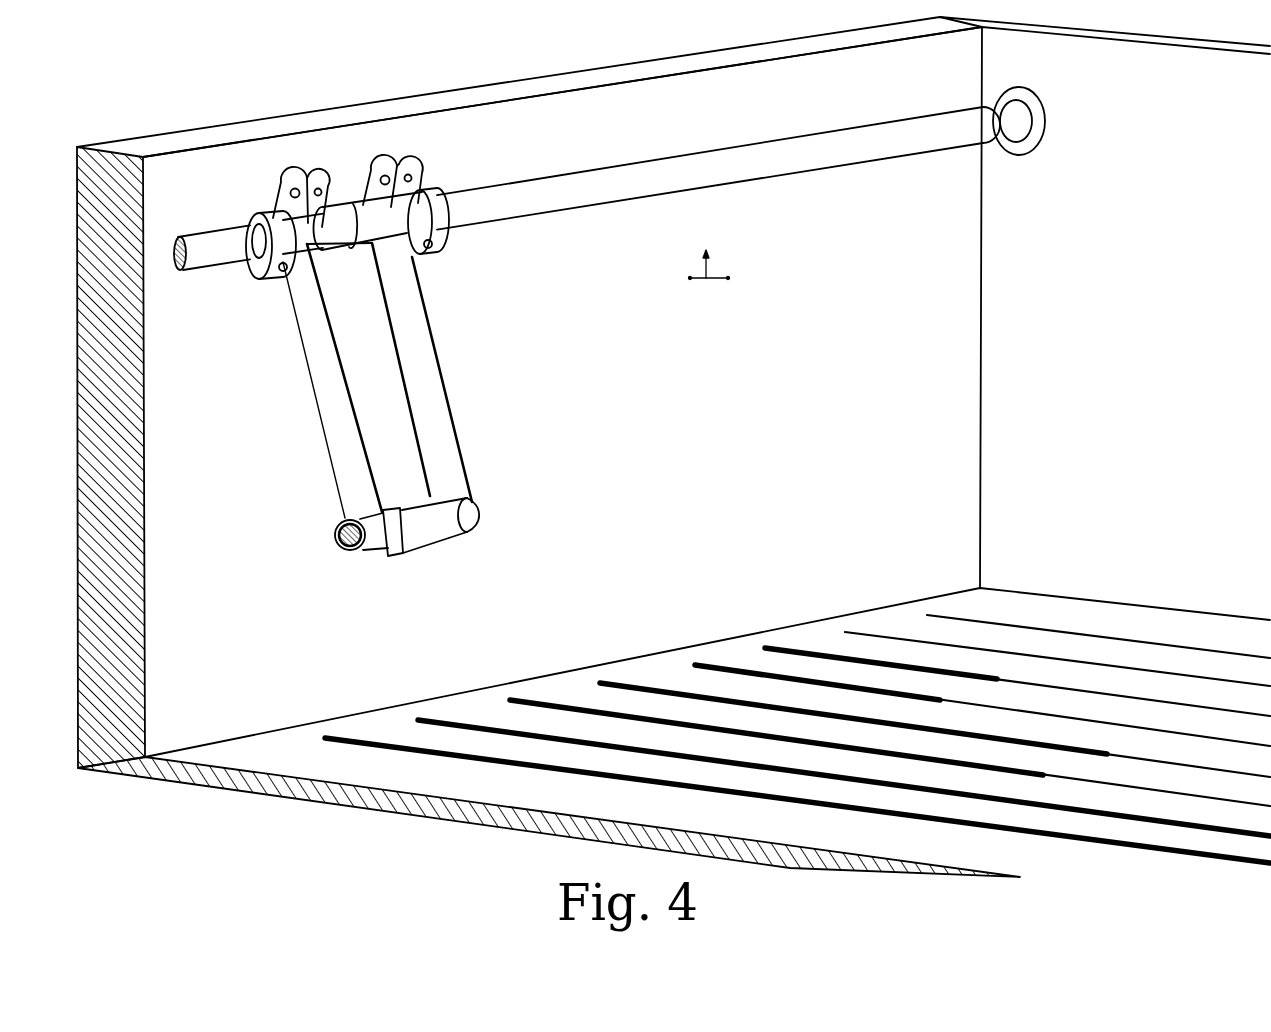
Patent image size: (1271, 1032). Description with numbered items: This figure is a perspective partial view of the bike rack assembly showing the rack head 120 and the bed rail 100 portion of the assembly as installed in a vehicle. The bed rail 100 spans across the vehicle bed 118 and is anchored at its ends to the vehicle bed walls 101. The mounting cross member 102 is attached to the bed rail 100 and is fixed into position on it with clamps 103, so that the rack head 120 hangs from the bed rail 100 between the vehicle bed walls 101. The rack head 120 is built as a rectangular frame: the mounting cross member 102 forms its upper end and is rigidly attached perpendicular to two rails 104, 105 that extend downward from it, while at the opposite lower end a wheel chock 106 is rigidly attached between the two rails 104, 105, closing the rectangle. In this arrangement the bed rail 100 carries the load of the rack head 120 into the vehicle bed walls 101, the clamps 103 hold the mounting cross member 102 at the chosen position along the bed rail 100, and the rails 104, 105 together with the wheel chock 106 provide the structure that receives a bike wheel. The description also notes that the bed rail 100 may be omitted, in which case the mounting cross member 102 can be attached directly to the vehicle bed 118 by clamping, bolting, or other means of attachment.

The bed rail 100 is at (478, 223).
The vehicle bed walls 101 is at (673, 447).
The mounting cross member 102 is at (334, 217).
The clamps 103 is at (255, 273).
The rail 104 is at (328, 405).
The rail 105 is at (435, 393).
The wheel chock 106 is at (425, 522).
The vehicle bed 118 is at (470, 115).
The rack head 120 is at (345, 361).